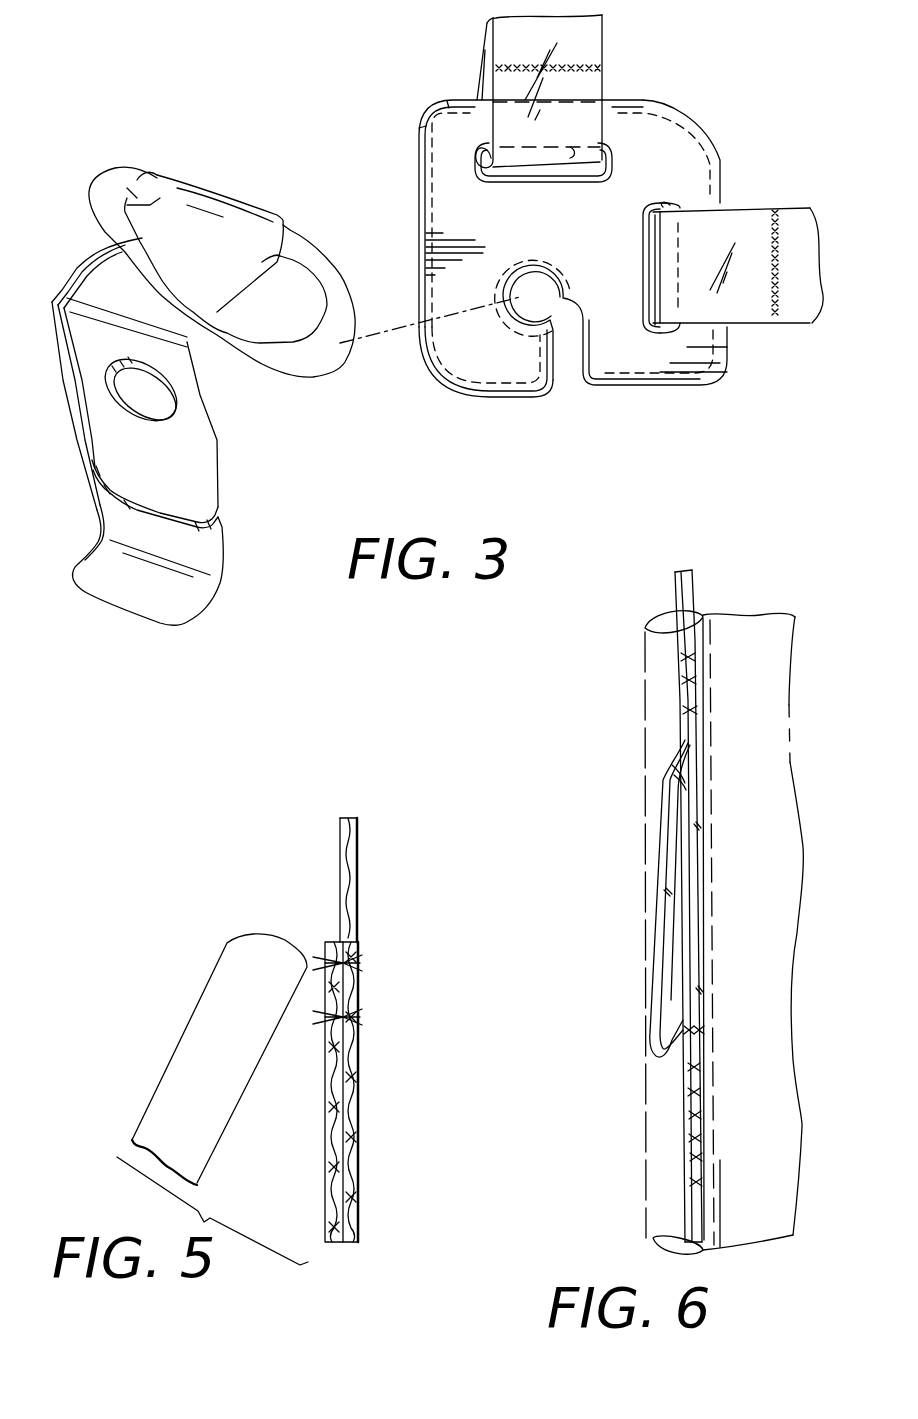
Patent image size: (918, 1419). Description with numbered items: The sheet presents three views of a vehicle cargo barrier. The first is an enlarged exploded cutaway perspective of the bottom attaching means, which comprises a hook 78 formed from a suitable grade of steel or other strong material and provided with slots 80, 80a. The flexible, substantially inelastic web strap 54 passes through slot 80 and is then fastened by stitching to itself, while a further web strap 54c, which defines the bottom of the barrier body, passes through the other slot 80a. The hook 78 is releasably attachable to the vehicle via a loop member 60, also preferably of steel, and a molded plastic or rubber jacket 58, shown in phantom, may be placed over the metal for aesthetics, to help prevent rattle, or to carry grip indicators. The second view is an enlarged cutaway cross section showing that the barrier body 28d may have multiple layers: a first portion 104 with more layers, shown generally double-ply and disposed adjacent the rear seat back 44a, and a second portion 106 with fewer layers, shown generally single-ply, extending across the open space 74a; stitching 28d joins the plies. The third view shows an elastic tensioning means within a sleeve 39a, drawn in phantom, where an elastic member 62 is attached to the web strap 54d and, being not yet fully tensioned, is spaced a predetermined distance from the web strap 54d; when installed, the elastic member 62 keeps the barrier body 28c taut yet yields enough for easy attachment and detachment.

In FIG. 3, the web strap 54 is at (503, 48).
In FIG. 3, the web strap 54c is at (785, 218).
In FIG. 6, the web strap 54d is at (692, 602).
In FIG. 3, the jacket 58 is at (628, 370).
In FIG. 3, the loop member 60 is at (241, 349).
In FIG. 6, the elastic member 62 is at (702, 902).
In FIG. 3, the hook 78 is at (610, 148).
In FIG. 3, the slot 80 is at (655, 177).
In FIG. 3, the slot 80a is at (673, 333).
In FIG. 6, the barrier body 28c is at (748, 697).
In FIG. 5, the barrier body 28d is at (337, 1085).
In FIG. 6, the sleeve 39a is at (644, 776).
In FIG. 5, the rear seat back 44a is at (200, 1025).
In FIG. 5, the open space 74a is at (208, 875).
In FIG. 5, the first portion 104 is at (323, 1192).
In FIG. 5, the second portion 106 is at (333, 853).